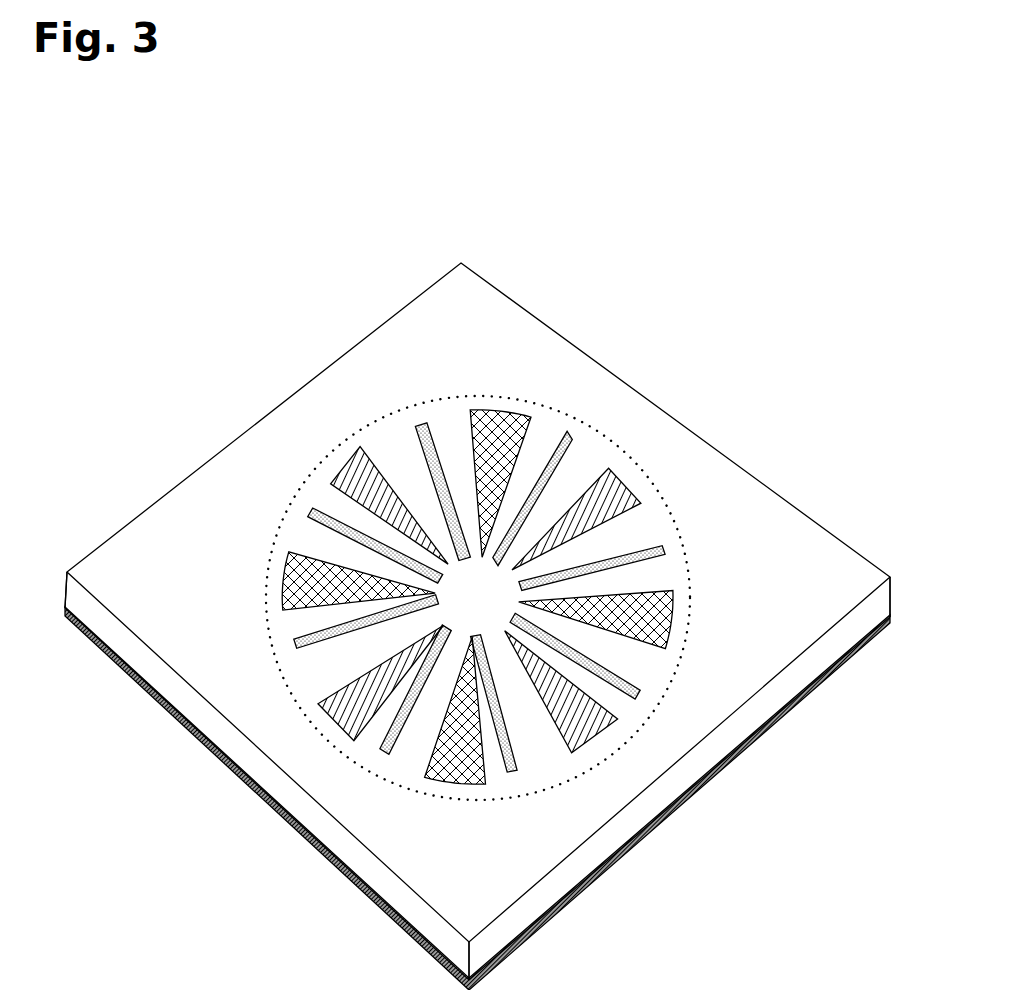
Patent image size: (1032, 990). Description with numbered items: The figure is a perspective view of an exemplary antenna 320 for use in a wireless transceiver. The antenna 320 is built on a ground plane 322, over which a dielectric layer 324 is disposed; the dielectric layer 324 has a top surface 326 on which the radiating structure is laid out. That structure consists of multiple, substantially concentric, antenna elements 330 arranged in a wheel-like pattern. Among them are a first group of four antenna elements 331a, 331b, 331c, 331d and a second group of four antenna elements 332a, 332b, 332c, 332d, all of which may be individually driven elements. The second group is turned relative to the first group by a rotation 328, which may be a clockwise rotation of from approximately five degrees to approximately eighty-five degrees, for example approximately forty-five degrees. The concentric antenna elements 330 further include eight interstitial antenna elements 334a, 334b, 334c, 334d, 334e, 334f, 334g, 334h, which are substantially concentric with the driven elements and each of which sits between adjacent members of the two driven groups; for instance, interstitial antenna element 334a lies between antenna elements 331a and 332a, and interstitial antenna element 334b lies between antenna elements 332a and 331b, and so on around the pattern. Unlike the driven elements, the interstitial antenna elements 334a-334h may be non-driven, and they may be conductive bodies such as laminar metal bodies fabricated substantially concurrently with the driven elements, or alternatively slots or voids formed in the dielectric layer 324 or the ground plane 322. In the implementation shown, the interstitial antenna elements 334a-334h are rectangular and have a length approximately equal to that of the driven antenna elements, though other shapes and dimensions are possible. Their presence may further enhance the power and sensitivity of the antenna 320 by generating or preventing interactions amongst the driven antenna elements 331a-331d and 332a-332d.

The antenna 320 is at (466, 591).
The ground plane 322 is at (280, 823).
The dielectric layer 324 is at (125, 642).
The top surface 326 is at (492, 323).
The rotation 328 is at (522, 615).
The multiple, substantially concentric, antenna elements 330 is at (480, 615).
The antenna element 331a is at (348, 453).
The antenna element 331b is at (662, 458).
The antenna element 331c is at (598, 748).
The antenna element 331d is at (322, 722).
The antenna element 332a is at (503, 406).
The antenna element 332b is at (680, 616).
The antenna element 332c is at (432, 796).
The antenna element 332d is at (287, 583).
The interstitial antenna element 334a is at (420, 420).
The interstitial antenna element 334b is at (597, 411).
The interstitial antenna element 334c is at (657, 553).
The interstitial antenna element 334d is at (640, 694).
The interstitial antenna element 334e is at (522, 790).
The interstitial antenna element 334f is at (380, 760).
The interstitial antenna element 334g is at (295, 650).
The interstitial antenna element 334h is at (308, 510).